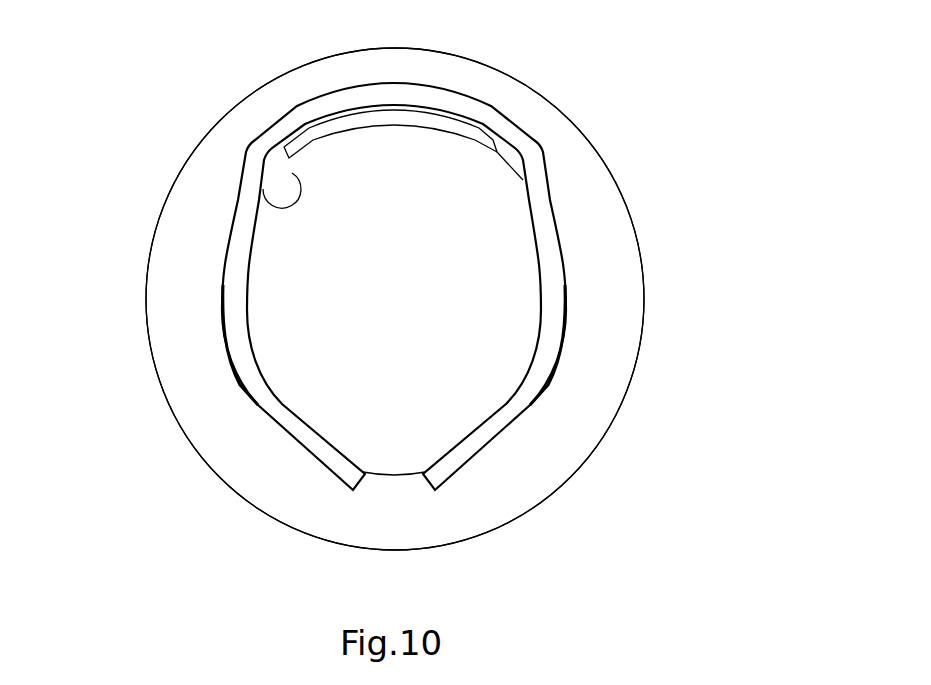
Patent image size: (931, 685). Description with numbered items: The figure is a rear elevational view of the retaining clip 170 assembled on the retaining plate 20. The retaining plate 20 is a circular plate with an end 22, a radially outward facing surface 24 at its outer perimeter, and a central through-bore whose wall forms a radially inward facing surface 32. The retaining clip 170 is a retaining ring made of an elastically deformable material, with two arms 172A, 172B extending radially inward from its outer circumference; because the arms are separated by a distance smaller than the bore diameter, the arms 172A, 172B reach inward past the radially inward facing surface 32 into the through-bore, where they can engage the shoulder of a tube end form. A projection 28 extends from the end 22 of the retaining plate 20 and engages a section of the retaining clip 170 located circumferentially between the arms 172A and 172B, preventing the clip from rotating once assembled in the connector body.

The retaining plate 20 is at (613, 297).
The end 22 is at (597, 198).
The radially outward facing surface 24 is at (590, 138).
The projection 28 is at (322, 137).
The radially inward facing surface 32 is at (263, 200).
The retaining clip 170 is at (415, 99).
The arm 172A is at (243, 230).
The arm 172B is at (541, 360).